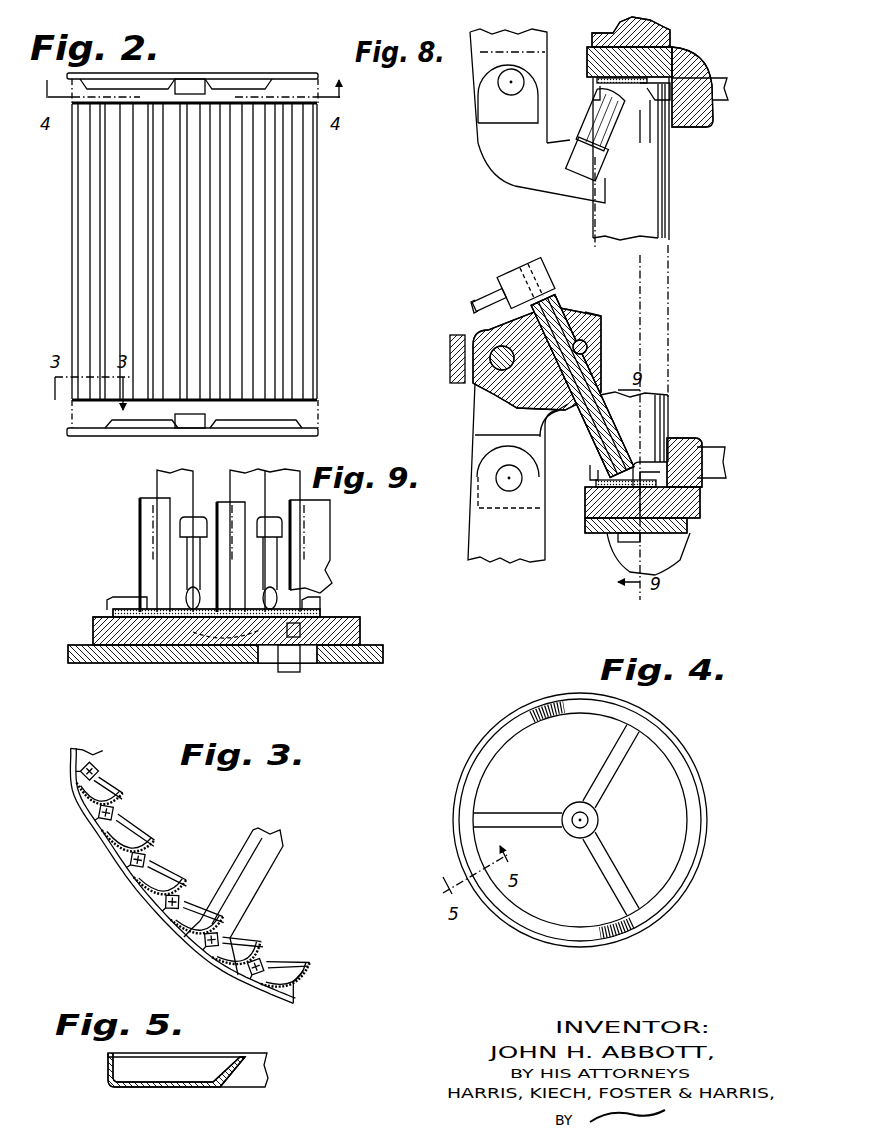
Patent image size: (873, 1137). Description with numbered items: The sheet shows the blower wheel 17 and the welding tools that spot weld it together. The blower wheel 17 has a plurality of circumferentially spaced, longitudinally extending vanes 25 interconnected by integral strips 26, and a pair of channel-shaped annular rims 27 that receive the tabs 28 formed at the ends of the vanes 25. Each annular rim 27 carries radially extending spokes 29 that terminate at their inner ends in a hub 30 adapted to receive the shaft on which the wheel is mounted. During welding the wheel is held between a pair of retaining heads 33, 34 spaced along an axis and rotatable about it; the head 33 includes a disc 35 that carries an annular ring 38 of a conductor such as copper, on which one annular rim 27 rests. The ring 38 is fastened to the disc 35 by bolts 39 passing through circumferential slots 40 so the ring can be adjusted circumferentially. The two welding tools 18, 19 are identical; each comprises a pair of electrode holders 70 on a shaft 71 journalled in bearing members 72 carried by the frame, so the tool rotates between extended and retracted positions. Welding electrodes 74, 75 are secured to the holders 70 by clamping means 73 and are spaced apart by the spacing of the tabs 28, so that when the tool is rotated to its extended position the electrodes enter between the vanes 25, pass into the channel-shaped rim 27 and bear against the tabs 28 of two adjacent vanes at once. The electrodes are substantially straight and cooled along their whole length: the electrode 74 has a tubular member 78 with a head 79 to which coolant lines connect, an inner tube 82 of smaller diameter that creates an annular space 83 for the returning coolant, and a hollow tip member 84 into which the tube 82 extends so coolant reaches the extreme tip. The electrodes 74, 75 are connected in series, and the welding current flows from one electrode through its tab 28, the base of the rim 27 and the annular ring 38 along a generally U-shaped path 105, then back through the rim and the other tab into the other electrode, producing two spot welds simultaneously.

In FIG. 2, the blower wheel 17 is at (318, 266).
In FIG. 3, the blower wheel 17 is at (110, 893).
In FIG. 8, the welding tool 18 is at (567, 315).
In FIG. 8, the welding tool 19 is at (517, 180).
In FIG. 2, the vanes 25 is at (282, 373).
In FIG. 8, the vanes 25 is at (670, 170).
In FIG. 9, the vanes 25 is at (140, 570).
In FIG. 3, the vanes 25 is at (112, 785).
In FIG. 3, the strips 26 is at (125, 823).
In FIG. 2, the annular rims 27 is at (298, 78).
In FIG. 8, the annular rims 27 is at (665, 60).
In FIG. 9, the annular rims 27 is at (320, 613).
In FIG. 3, the annular rims 27 is at (250, 958).
In FIG. 4, the annular rims 27 is at (525, 925).
In FIG. 5, the annular rims 27 is at (190, 1087).
In FIG. 8, the tabs 28 is at (596, 96).
In FIG. 9, the tabs 28 is at (175, 617).
In FIG. 3, the tabs 28 is at (142, 925).
In FIG. 2, the spokes 29 is at (245, 82).
In FIG. 3, the spokes 29 is at (262, 882).
In FIG. 4, the spokes 29 is at (598, 770).
In FIG. 2, the hubs 30 is at (195, 86).
In FIG. 4, the hubs 30 is at (575, 833).
In FIG. 8, the head 33 is at (696, 536).
In FIG. 9, the head 33 is at (190, 667).
In FIG. 8, the head 34 is at (728, 68).
In FIG. 8, the disc 35 is at (705, 85).
In FIG. 9, the disc 35 is at (355, 664).
In FIG. 8, the annular ring 38 is at (635, 50).
In FIG. 9, the annular ring 38 is at (360, 640).
In FIG. 8, the bolts 39 is at (625, 541).
In FIG. 9, the bolts 39 is at (290, 658).
In FIG. 9, the circumferential slots 40 is at (304, 664).
In FIG. 8, the electrode holders 70 is at (483, 150).
In FIG. 8, the shaft 71 is at (497, 90).
In FIG. 8, the bearing members 72 is at (481, 80).
In FIG. 8, the clamping means 73 is at (590, 347).
In FIG. 8, the welding electrode 74 is at (598, 346).
In FIG. 9, the welding electrode 74 is at (185, 540).
In FIG. 9, the welding electrode 75 is at (282, 535).
In FIG. 8, the tubular member 78 is at (588, 320).
In FIG. 8, the head 79 is at (542, 270).
In FIG. 8, the tube 82 is at (600, 412).
In FIG. 8, the annular space 83 is at (560, 422).
In FIG. 8, the hollow tip member 84 is at (590, 466).
In FIG. 9, the hollow tip member 84 is at (240, 565).
In FIG. 9, the U-shaped path 105 is at (238, 618).